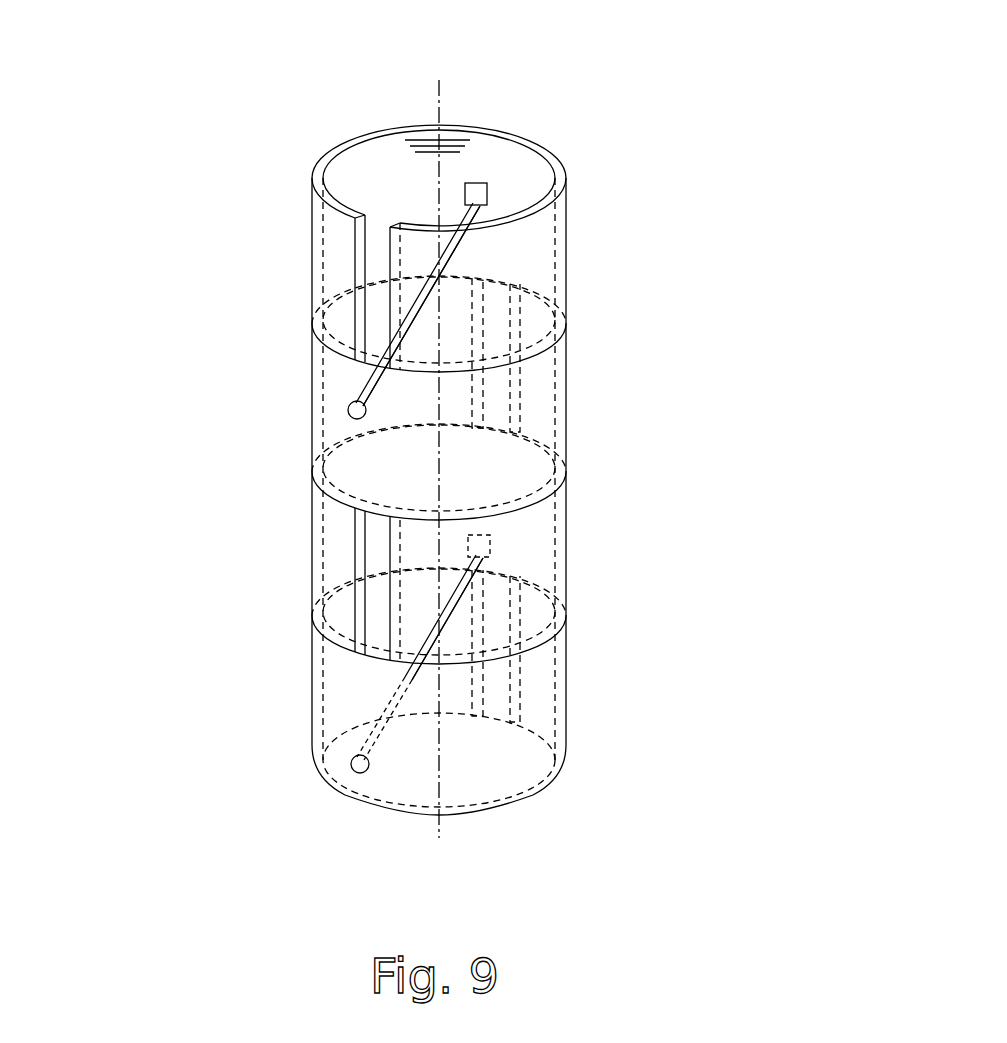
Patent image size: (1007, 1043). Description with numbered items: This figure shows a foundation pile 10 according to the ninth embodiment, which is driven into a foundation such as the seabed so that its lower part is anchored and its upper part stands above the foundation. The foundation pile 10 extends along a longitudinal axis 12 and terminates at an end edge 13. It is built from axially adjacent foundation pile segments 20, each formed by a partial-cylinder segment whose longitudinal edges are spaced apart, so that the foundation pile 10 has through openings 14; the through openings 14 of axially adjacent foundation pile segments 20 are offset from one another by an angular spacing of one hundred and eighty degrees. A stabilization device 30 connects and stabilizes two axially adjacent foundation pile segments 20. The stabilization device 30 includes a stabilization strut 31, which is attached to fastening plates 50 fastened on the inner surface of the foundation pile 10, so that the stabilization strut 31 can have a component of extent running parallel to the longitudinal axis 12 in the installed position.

The foundation pile 10 is at (524, 419).
The longitudinal axis 12 is at (437, 108).
The end edge 13 is at (520, 137).
The through openings 14 is at (370, 247).
The foundation pile segments 20 is at (587, 213).
The stabilization device 30 is at (453, 248).
The stabilization strut 31 is at (423, 443).
The fastening plates 50 is at (485, 183).